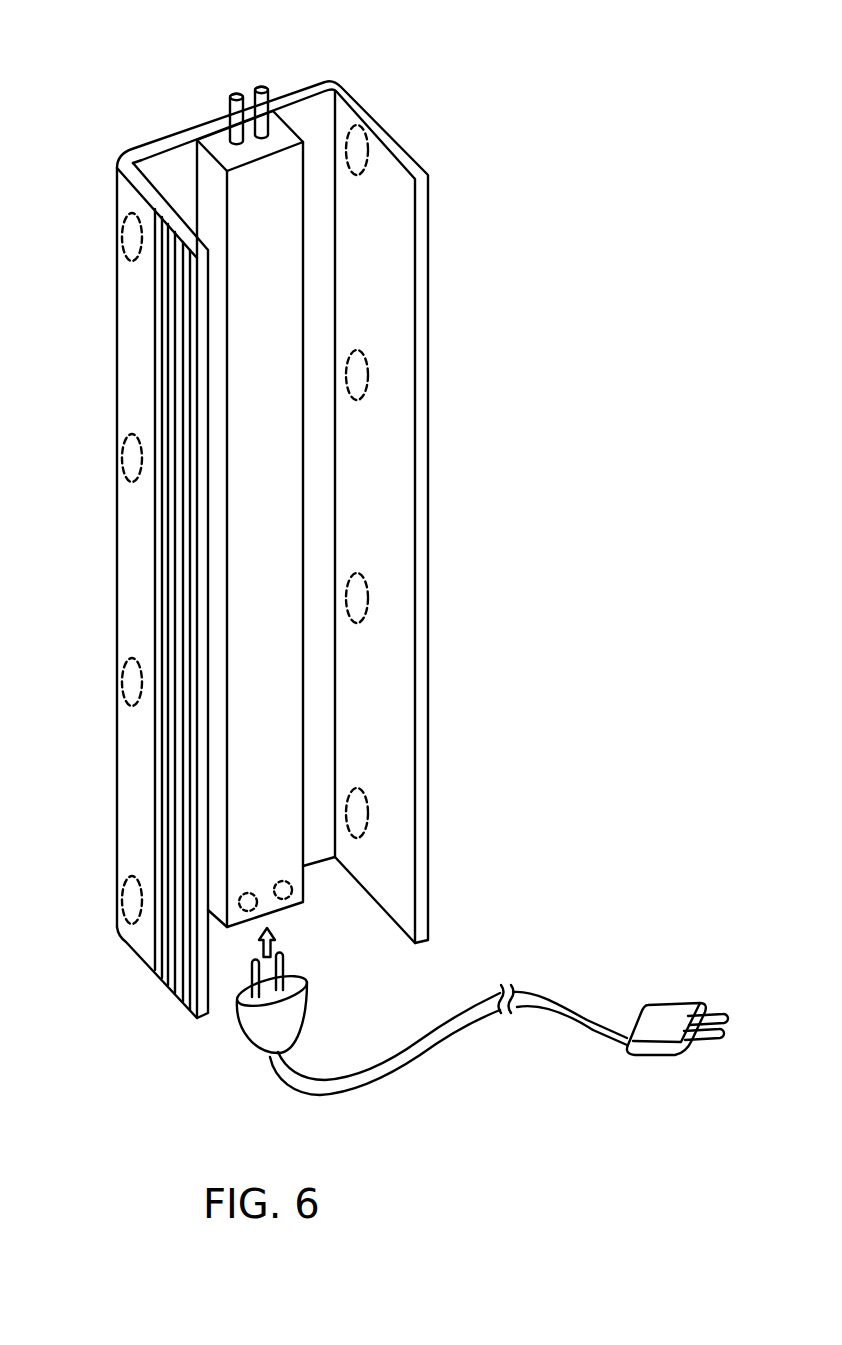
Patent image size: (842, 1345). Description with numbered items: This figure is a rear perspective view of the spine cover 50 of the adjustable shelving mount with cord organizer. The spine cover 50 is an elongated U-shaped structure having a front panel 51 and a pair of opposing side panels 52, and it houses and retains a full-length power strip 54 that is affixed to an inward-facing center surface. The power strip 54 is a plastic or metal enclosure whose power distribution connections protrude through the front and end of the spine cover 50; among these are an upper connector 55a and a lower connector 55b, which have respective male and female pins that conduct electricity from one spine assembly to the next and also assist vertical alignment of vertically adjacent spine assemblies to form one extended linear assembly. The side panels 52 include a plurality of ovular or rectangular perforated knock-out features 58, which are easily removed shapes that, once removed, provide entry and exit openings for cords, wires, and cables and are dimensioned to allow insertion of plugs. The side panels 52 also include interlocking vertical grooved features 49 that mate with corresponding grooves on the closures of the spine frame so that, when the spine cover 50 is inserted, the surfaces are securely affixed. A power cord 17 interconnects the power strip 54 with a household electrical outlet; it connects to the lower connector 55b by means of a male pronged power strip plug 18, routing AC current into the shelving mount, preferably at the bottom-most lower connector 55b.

The spine cover 50 is at (445, 33).
The front panel 51 is at (153, 172).
The side panels 52 is at (412, 167).
The power strip 54 is at (280, 268).
The upper connector 55a is at (262, 86).
The lower connector 55b is at (285, 893).
The knock-out features 58 is at (134, 237).
The grooved features 49 is at (180, 548).
The power strip plug 18 is at (266, 1026).
The power cord 17 is at (470, 1018).